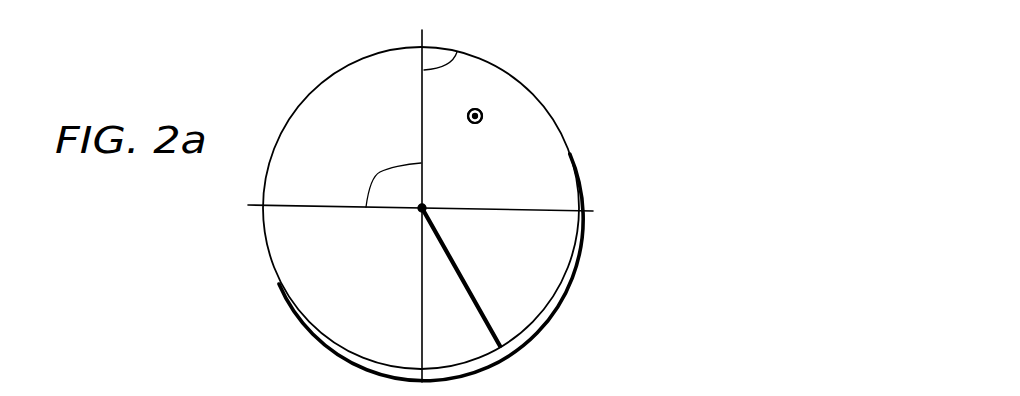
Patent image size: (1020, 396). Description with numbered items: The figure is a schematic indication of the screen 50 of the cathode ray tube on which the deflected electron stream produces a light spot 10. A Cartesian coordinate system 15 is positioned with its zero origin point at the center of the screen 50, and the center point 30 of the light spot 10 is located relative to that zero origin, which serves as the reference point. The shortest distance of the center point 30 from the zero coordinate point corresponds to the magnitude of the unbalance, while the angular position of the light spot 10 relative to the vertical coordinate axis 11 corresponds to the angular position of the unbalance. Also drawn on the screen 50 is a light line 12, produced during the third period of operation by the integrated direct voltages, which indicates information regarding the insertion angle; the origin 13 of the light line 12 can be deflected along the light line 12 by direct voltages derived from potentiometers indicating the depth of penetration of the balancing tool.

The light spot 10 is at (478, 109).
The vertical coordinate axis 11 is at (459, 43).
The light line 12 is at (485, 313).
The origin of the light line 13 is at (425, 206).
The Cartesian coordinate system 15 is at (384, 180).
The center point of the light spot 30 is at (468, 113).
The screen 50 is at (320, 329).